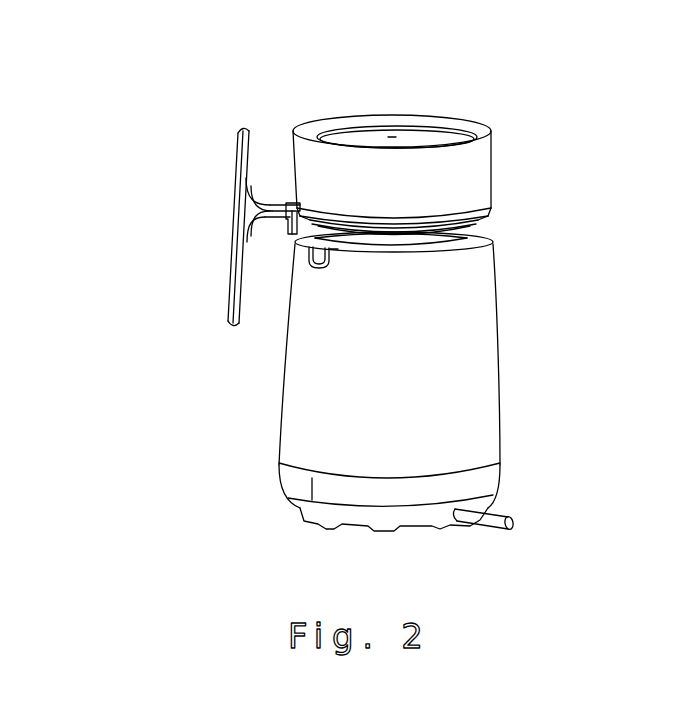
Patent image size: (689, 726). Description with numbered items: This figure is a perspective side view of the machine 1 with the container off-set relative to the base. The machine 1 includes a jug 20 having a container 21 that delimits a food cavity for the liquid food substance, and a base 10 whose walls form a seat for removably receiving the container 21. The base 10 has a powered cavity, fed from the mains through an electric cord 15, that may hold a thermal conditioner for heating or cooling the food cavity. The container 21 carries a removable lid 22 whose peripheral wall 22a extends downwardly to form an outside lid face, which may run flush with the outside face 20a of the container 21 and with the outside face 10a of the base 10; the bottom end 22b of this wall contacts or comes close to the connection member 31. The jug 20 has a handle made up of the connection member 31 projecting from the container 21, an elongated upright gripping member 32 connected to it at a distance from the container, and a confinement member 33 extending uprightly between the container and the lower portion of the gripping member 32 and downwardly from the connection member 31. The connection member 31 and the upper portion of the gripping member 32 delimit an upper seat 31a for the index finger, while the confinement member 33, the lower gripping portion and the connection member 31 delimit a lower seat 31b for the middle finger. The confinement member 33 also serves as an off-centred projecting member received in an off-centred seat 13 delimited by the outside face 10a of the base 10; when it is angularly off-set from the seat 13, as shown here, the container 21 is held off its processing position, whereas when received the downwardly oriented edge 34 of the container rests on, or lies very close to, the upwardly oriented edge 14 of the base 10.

The machine 1 is at (95, 85).
The base 10 is at (278, 462).
The outside face of base 10a is at (443, 433).
The off-centred seat 13 is at (317, 267).
The upwardly oriented edge of base 14 is at (480, 240).
The electric cord 15 is at (497, 517).
The jug 20 is at (467, 225).
The outside face of container 20a is at (400, 222).
The container 21 is at (428, 238).
The removable lid 22 is at (370, 145).
The peripheral wall of lid 22a is at (463, 158).
The bottom end of peripheral wall 22b is at (492, 200).
The connection member 31 is at (275, 208).
The upper seat 31a is at (268, 182).
The lower seat 31b is at (258, 238).
The gripping member 32 is at (238, 218).
The confinement member 33 is at (292, 232).
The downwardly oriented edge of container 34 is at (377, 227).